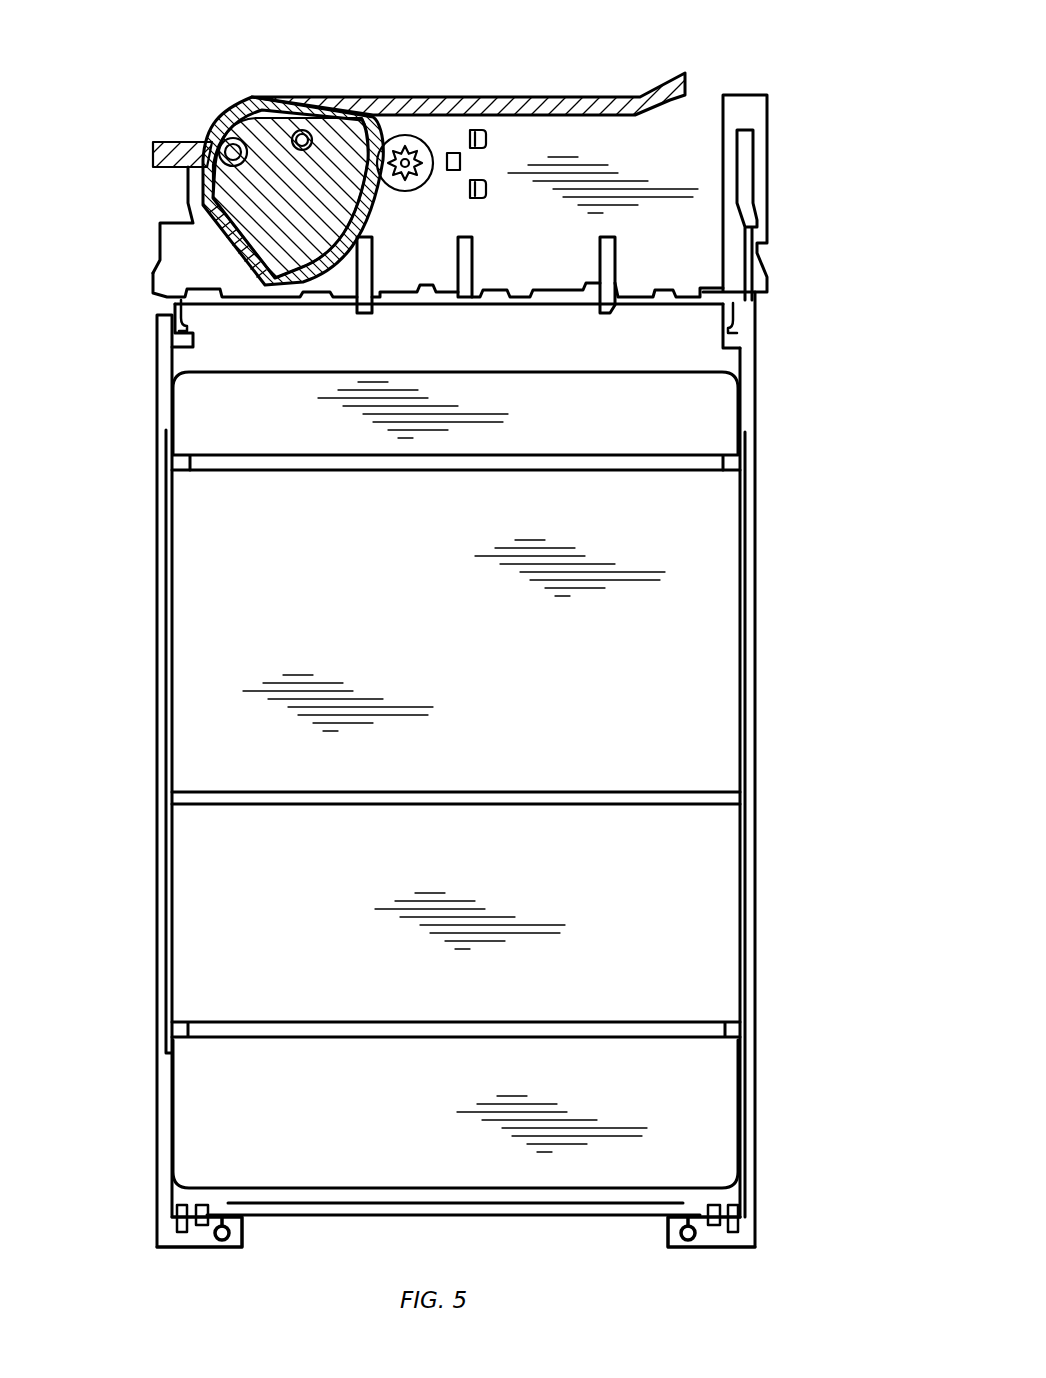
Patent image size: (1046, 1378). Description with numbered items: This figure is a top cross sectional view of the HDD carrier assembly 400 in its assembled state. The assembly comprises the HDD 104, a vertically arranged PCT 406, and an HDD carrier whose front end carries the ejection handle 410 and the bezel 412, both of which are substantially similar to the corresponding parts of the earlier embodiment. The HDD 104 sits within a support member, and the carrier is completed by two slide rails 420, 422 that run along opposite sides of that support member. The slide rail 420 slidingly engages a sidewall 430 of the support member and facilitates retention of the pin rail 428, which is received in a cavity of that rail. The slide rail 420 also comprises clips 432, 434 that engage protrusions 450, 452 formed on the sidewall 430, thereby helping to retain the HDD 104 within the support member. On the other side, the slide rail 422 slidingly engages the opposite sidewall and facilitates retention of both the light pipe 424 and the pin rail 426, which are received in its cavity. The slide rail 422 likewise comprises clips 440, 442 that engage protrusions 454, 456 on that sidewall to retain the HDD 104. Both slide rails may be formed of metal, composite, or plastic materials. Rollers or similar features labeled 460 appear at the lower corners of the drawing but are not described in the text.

The HDD carrier assembly 400 is at (748, 37).
The HDD 104 is at (586, 713).
The vertically arranged PCT 406 is at (425, 1216).
The ejection handle 410 is at (270, 97).
The bezel 412 is at (705, 95).
The slide rail 420 is at (160, 1137).
The slide rail 422 is at (748, 398).
The light pipe 424 is at (752, 1130).
The pin rail 426 is at (168, 1033).
The pin rail 428 is at (742, 1033).
The sidewall 430 is at (203, 371).
The clip 432 is at (198, 1246).
The clip 434 is at (203, 326).
The clip 440 is at (722, 1247).
The clip 442 is at (735, 345).
The protrusion 450 is at (178, 1220).
The protrusion 452 is at (178, 322).
The protrusion 454 is at (735, 1223).
The protrusion 456 is at (733, 322).
The rollers 460 is at (238, 1222).